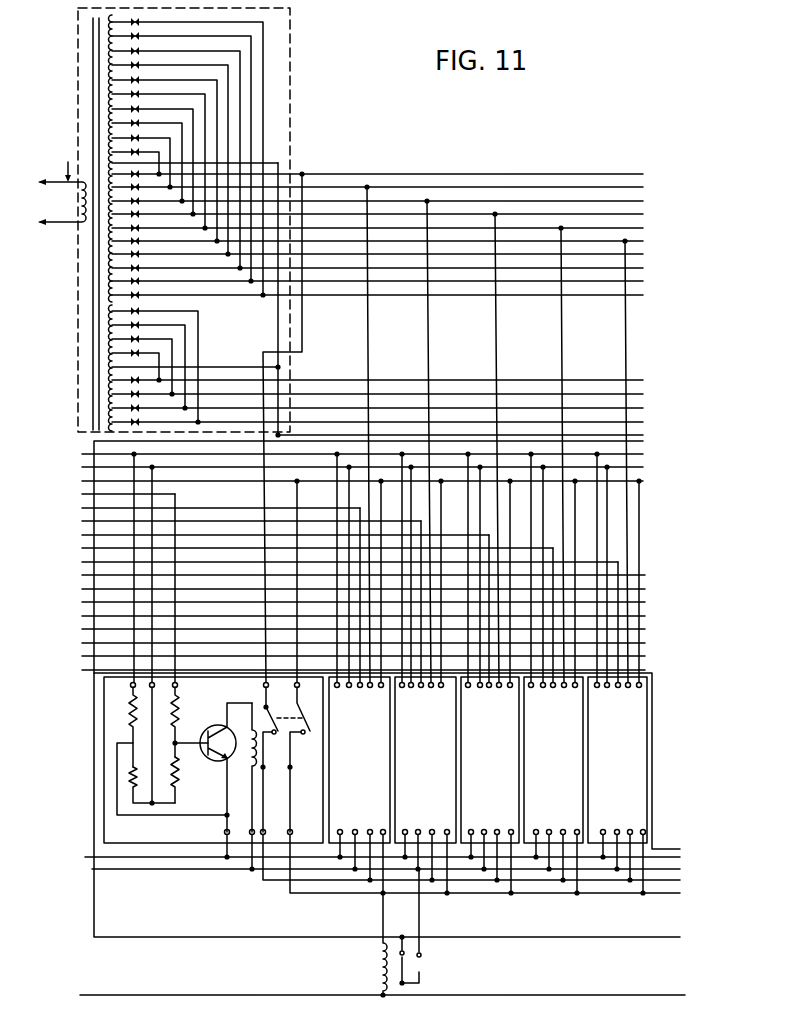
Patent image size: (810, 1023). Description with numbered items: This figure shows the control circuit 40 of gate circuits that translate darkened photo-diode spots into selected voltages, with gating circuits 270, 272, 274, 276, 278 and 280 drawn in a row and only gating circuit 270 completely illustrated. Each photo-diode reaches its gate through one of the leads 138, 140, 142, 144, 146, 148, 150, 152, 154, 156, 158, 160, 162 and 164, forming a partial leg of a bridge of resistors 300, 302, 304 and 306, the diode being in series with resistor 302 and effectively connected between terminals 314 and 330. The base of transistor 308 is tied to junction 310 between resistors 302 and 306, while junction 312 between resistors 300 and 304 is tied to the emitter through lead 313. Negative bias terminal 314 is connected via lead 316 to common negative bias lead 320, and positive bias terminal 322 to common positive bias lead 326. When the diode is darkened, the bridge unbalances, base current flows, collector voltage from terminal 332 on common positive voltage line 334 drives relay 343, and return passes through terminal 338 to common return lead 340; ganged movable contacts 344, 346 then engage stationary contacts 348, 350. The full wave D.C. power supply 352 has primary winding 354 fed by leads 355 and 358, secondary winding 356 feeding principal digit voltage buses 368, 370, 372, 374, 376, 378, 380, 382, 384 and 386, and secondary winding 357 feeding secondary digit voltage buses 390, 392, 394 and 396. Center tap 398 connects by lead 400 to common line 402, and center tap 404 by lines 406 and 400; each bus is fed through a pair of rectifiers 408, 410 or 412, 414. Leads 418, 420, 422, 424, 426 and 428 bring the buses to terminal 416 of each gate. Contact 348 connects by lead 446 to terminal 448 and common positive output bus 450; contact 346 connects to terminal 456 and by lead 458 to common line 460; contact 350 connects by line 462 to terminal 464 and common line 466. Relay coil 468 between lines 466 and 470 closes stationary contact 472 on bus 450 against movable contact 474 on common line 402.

The control circuit 40 is at (92, 800).
The lead 138 is at (84, 494).
The lead 140 is at (84, 508).
The lead 142 is at (84, 521).
The lead 144 is at (84, 535).
The lead 146 is at (84, 548).
The lead 148 is at (84, 562).
The lead 150 is at (84, 575).
The lead 152 is at (84, 589).
The lead 154 is at (84, 602).
The lead 156 is at (84, 616).
The lead 158 is at (84, 629).
The lead 160 is at (84, 643).
The lead 162 is at (84, 656).
The lead 164 is at (84, 670).
The gating circuit 270 is at (122, 833).
The gating circuit 272 is at (359, 760).
The gating circuit 274 is at (425, 760).
The gating circuit 276 is at (490, 760).
The gating circuit 278 is at (553, 760).
The gating circuit 280 is at (617, 760).
The resistor 300 is at (123, 727).
The resistor 302 is at (189, 722).
The resistor 304 is at (129, 777).
The resistor 306 is at (190, 780).
The transistor 308 is at (224, 767).
The junction 310 is at (193, 760).
The junction 312 is at (131, 746).
The lead 313 is at (117, 787).
The terminal 314 is at (360, 580).
The lead 316 is at (137, 460).
The common negative bias lead 320 is at (84, 454).
The terminal 322 is at (360, 633).
The common positive bias lead 326 is at (84, 467).
The terminal 330 is at (403, 602).
The terminal 332 is at (250, 871).
The common positive voltage line 334 is at (154, 468).
The terminal 338 is at (398, 836).
The common return lead 340 is at (84, 857).
The relay 343 is at (243, 767).
The movable contact 344 is at (284, 709).
The movable contact 346 is at (309, 709).
The stationary contact 348 is at (273, 781).
The stationary contact 350 is at (303, 781).
The full wave D.C. power supply 352 is at (293, 67).
The primary winding 354 is at (52, 168).
The lead 355 is at (59, 202).
The secondary winding 356 is at (131, 64).
The secondary winding 357 is at (108, 331).
The lead 358 is at (80, 240).
The principal digit voltage bus 368 is at (330, 180).
The principal digit voltage bus 370 is at (347, 187).
The principal digit voltage bus 372 is at (382, 200).
The principal digit voltage bus 374 is at (444, 213).
The principal digit voltage bus 376 is at (508, 227).
The principal digit voltage bus 378 is at (574, 240).
The principal digit voltage bus 380 is at (639, 255).
The principal digit voltage bus 382 is at (641, 268).
The principal digit voltage bus 384 is at (644, 281).
The principal digit voltage bus 386 is at (644, 295).
The secondary digit voltage bus 390 is at (640, 380).
The secondary digit voltage bus 392 is at (642, 391).
The secondary digit voltage bus 394 is at (644, 406).
The secondary digit voltage bus 396 is at (644, 421).
The center tap 398 is at (112, 163).
The lead 400 is at (280, 166).
The common line 402 is at (302, 433).
The center tap 404 is at (134, 379).
The line 406 is at (276, 362).
The selenium rectifier 408 is at (131, 22).
The selenium rectifier 410 is at (131, 295).
The rectifier 412 is at (140, 352).
The rectifier 414 is at (141, 379).
The terminal 416 is at (423, 704).
The lead 418 is at (304, 311).
The lead 420 is at (370, 341).
The lead 422 is at (430, 341).
The lead 424 is at (498, 338).
The lead 426 is at (564, 341).
The lead 428 is at (628, 318).
The lead 446 is at (271, 776).
The terminal 448 is at (449, 847).
The common positive output bus 450 is at (275, 883).
The terminal 456 is at (456, 703).
The lead 458 is at (661, 525).
The common line 460 is at (84, 481).
The line 462 is at (299, 790).
The terminal 464 is at (486, 840).
The common line 466 is at (328, 895).
The relay coil 468 is at (381, 965).
The line 470 is at (170, 1001).
The stationary contact 472 is at (420, 982).
The movable contact 474 is at (423, 957).